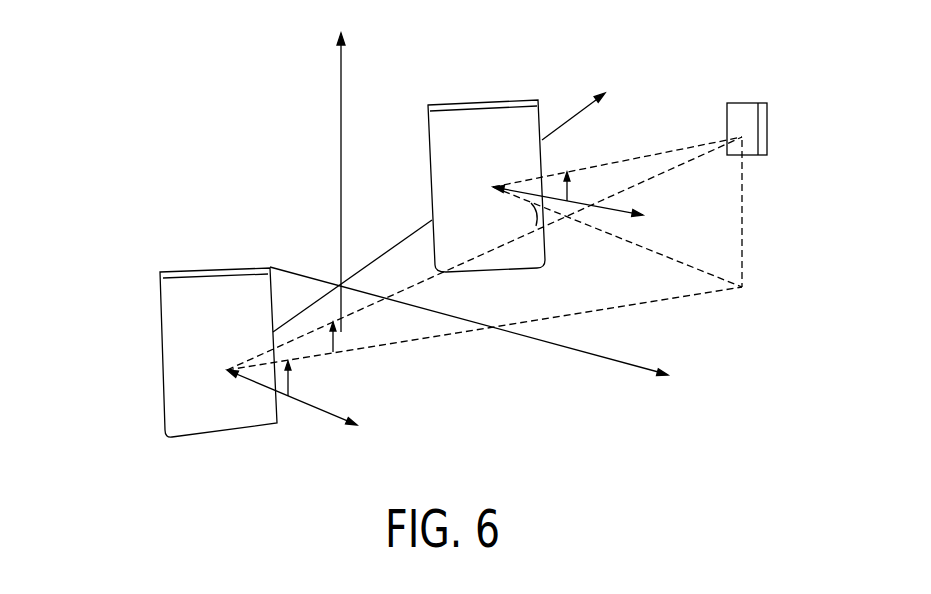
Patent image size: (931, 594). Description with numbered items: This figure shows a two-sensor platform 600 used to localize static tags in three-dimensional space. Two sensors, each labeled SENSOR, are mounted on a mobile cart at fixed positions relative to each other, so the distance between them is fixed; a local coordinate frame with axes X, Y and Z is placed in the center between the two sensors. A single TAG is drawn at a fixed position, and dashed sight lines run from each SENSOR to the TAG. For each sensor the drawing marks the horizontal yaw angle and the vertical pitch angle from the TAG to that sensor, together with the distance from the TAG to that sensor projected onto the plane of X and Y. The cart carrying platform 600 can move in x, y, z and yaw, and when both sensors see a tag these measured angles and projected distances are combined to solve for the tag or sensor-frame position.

The two-sensor platform 600 is at (226, 94).
The sensor SENSOR is at (482, 100).
The tag TAG is at (768, 123).
The x axis X is at (478, 338).
The y axis Y is at (448, 205).
The z axis Z is at (341, 166).